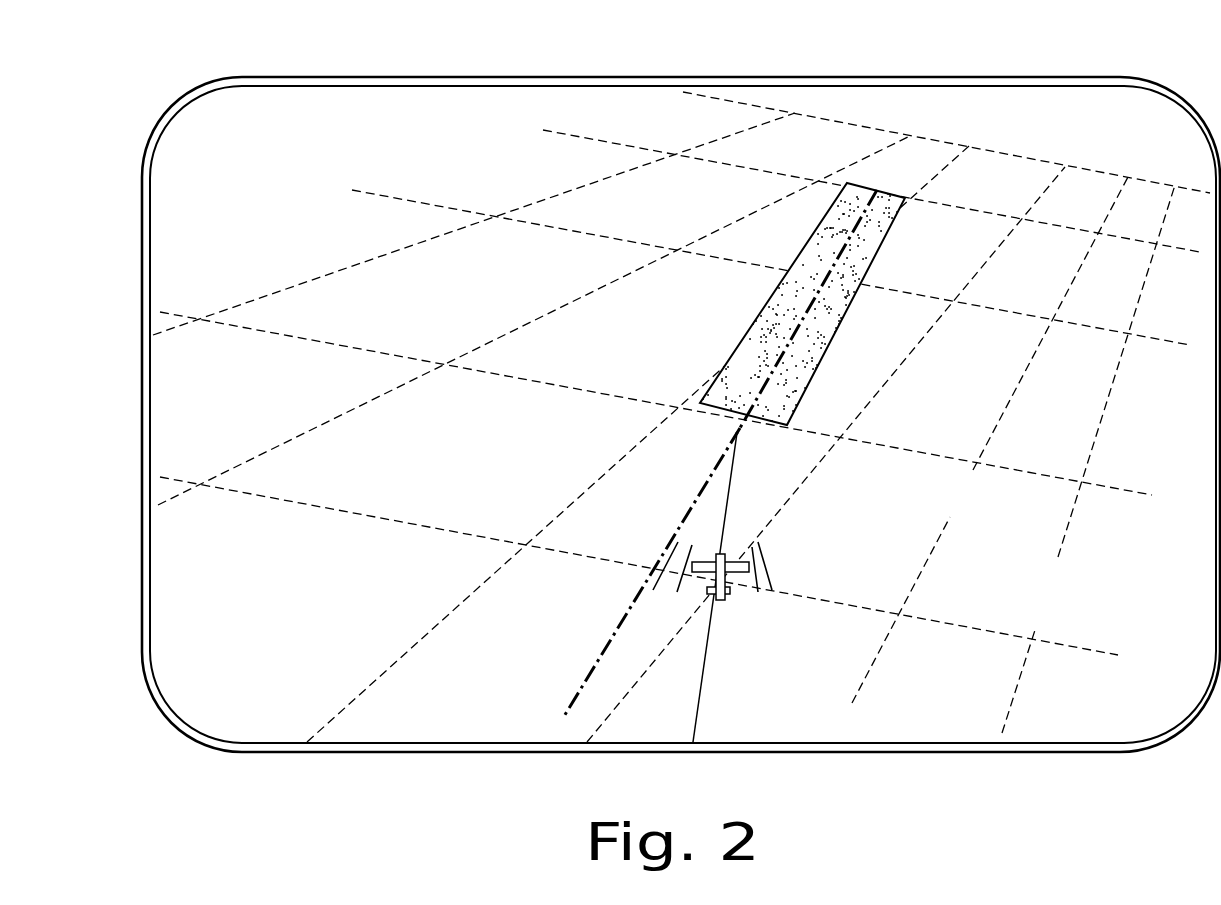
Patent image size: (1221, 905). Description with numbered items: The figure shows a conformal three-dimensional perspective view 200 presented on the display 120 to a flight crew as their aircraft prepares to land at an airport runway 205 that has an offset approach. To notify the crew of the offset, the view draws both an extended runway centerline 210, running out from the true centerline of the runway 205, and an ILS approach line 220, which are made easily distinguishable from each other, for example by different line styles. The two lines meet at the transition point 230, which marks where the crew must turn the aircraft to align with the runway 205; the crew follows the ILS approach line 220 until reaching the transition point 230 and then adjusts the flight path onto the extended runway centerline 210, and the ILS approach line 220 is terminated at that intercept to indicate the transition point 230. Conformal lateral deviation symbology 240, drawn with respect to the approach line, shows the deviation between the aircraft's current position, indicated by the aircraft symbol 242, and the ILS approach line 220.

The conformal 3D perspective view 200 is at (110, 112).
The display 120 is at (142, 236).
The runway 205 is at (749, 328).
The extended runway centerline 210 is at (712, 472).
The ILS approach line 220 is at (703, 670).
The transition point 230 is at (737, 434).
The conformal lateral deviation symbology 240 is at (803, 558).
The aircraft symbol 242 is at (732, 589).